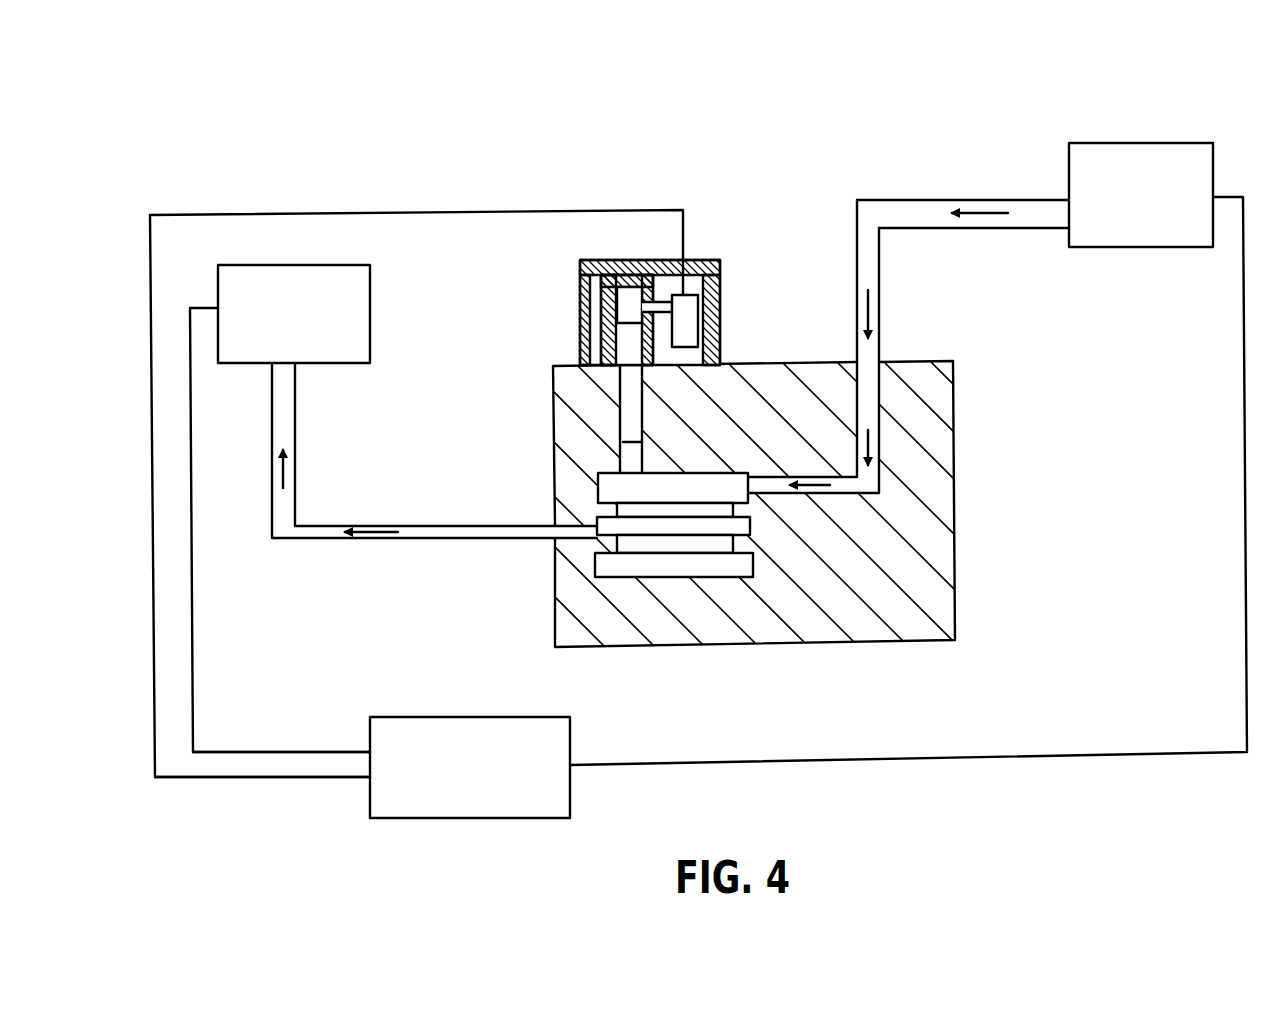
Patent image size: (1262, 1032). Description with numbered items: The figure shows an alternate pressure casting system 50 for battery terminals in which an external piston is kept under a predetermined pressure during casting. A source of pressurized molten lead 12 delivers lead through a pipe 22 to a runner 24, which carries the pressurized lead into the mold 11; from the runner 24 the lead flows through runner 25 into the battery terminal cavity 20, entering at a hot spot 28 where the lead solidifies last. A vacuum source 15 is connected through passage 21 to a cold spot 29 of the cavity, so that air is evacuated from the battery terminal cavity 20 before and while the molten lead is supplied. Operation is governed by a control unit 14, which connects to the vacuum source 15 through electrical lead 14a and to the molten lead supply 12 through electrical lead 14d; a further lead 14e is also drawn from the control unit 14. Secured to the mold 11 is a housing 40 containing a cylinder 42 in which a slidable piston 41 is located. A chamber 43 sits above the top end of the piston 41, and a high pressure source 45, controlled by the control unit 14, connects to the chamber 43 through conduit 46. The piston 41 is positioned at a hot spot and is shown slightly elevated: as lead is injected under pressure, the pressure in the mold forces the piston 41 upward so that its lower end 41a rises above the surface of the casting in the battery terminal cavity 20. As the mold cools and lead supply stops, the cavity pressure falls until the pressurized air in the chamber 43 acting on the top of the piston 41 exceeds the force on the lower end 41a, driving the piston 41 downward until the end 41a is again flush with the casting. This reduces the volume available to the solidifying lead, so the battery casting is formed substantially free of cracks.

The mold 11 is at (750, 362).
The source of pressurized molten lead 12 is at (1141, 143).
The control unit 14 is at (462, 717).
The electrical lead 14a is at (296, 752).
The electrical lead 14d is at (730, 765).
The control line to pressure sensor 14e is at (295, 778).
The vacuum source 15 is at (370, 312).
The battery terminal cavity 20 is at (673, 572).
The passage 21 is at (447, 521).
The pipe 22 is at (978, 200).
The runner 24 is at (872, 398).
The runner 25 is at (862, 492).
The hot spot 28 is at (752, 472).
The cold spot 29 is at (565, 503).
The housing 40 is at (713, 259).
The piston 41 is at (600, 351).
The lower end of piston 41a is at (618, 452).
The cylinder 42 is at (600, 296).
The chamber 43 is at (628, 296).
The high pressure source 45 is at (703, 306).
The conduit 46 is at (664, 296).
The system 50 is at (803, 155).